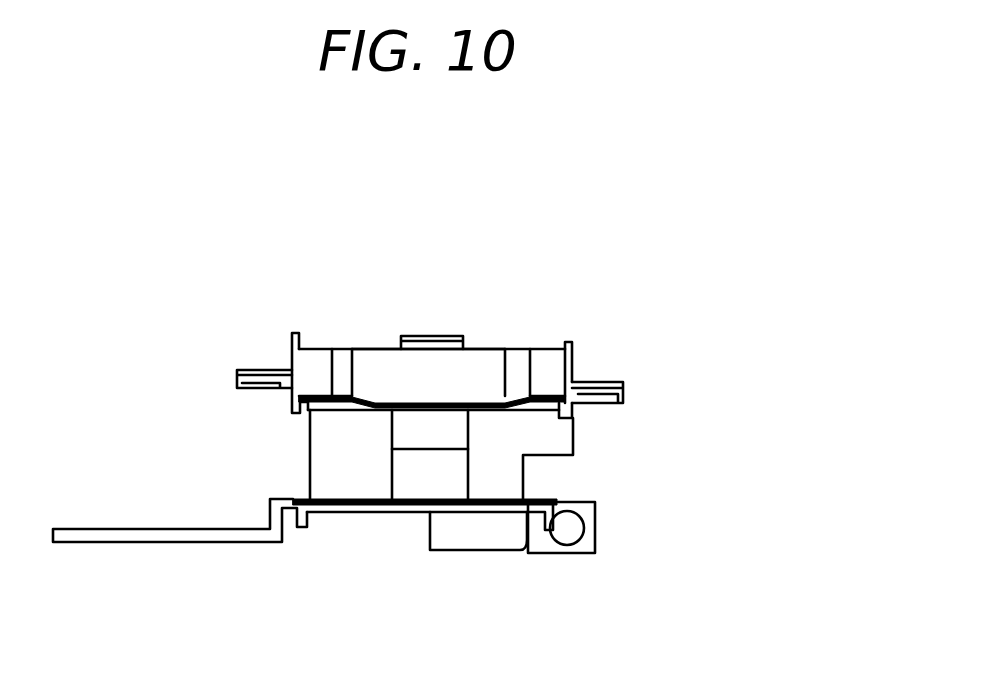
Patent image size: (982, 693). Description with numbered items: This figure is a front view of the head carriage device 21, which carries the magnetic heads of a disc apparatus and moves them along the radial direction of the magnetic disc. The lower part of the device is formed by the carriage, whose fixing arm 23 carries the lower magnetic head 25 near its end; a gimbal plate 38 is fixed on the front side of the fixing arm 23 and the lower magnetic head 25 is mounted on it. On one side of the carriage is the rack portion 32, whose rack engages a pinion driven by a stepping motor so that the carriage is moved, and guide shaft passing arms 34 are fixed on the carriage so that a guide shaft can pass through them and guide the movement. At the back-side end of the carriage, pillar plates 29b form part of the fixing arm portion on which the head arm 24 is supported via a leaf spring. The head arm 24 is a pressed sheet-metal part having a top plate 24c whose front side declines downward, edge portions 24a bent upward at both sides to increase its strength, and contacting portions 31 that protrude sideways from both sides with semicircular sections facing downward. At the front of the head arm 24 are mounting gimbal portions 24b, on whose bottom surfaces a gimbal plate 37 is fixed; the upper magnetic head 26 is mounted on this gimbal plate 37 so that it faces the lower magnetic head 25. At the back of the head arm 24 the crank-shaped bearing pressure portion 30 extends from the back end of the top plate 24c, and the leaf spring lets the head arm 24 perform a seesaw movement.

The head carriage device 21 is at (481, 160).
The fixing arm 23 is at (524, 516).
The head arm 24 is at (543, 350).
The edge portions 24a is at (290, 342).
The mounting gimbal portions 24b is at (305, 412).
The top plate 24c is at (470, 378).
The lower magnetic head 25 is at (402, 473).
The upper magnetic head 26 is at (400, 427).
The pillar plates 29b is at (325, 458).
The bearing pressure portion 30 is at (430, 335).
The contacting portions 31 is at (248, 368).
The rack portion 32 is at (78, 528).
The guide shaft passing arms 34 is at (595, 537).
The gimbal plate 37 is at (360, 410).
The gimbal plate 38 is at (482, 500).